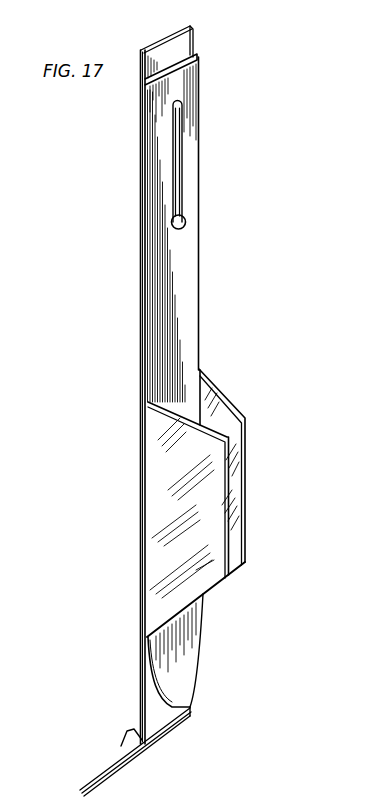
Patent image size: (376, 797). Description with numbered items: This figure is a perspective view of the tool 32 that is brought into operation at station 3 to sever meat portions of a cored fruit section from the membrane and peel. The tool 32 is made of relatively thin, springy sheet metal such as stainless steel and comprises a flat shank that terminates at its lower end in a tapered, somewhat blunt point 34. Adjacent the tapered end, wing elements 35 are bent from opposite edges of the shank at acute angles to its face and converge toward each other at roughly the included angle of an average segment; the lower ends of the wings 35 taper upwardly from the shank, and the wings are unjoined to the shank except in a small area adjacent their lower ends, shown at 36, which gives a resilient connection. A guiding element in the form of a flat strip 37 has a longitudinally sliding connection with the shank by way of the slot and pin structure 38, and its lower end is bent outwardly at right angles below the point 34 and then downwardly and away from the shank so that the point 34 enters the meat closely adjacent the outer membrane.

The station 3 is at (197, 293).
The flat strip 37 is at (143, 215).
The slot and pin structure 38 is at (186, 222).
The tool 32 is at (194, 513).
The wing elements 35 is at (246, 440).
The small area of juncture 36 is at (153, 617).
The tapered point 34 is at (183, 680).